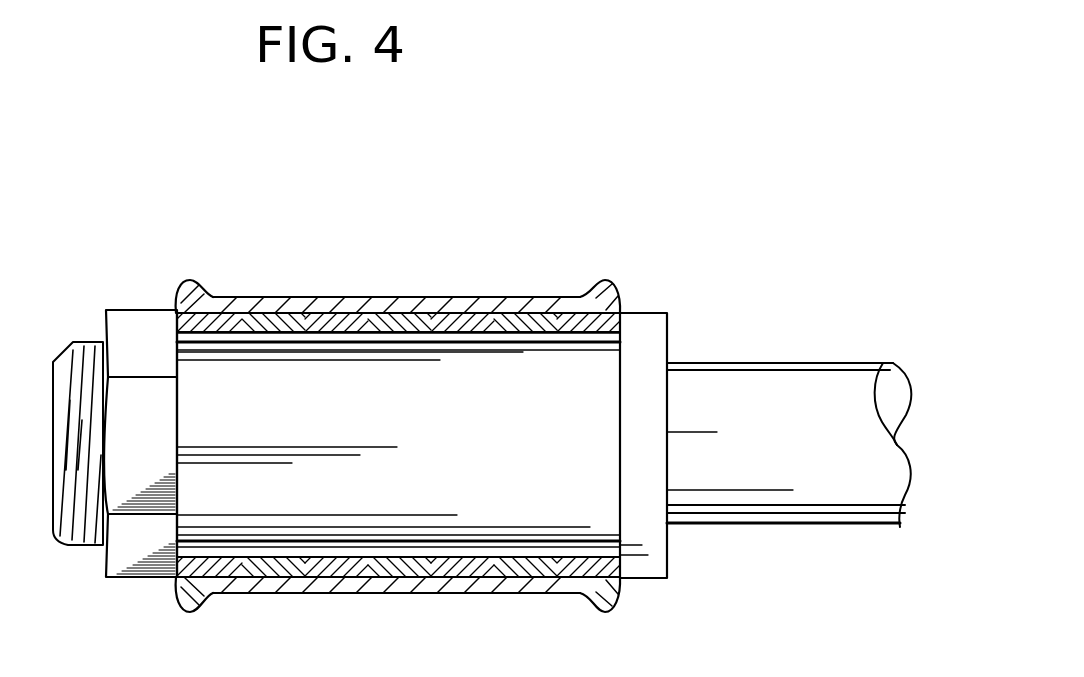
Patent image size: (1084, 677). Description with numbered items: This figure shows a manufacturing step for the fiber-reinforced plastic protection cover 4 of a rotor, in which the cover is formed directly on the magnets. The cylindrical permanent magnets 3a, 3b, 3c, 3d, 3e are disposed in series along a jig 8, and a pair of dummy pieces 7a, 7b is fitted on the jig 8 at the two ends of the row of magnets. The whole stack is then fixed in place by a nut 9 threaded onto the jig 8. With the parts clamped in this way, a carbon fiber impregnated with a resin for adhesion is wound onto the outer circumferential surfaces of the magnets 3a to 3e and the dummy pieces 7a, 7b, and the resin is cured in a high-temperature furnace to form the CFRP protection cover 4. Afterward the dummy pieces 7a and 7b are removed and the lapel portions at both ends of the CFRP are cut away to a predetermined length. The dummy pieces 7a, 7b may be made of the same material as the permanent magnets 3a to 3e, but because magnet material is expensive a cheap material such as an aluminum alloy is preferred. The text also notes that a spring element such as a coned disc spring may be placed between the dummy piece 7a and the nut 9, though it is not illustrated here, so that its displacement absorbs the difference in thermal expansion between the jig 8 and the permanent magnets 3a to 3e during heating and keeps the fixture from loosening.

The permanent magnet 3a is at (283, 312).
The permanent magnet 3b is at (350, 312).
The permanent magnet 3c is at (423, 312).
The permanent magnet 3d is at (487, 312).
The permanent magnet 3e is at (555, 312).
The protection cover 4 is at (450, 300).
The dummy piece 7a is at (207, 298).
The dummy piece 7b is at (618, 294).
The jig 8 is at (783, 385).
The nut 9 is at (133, 322).